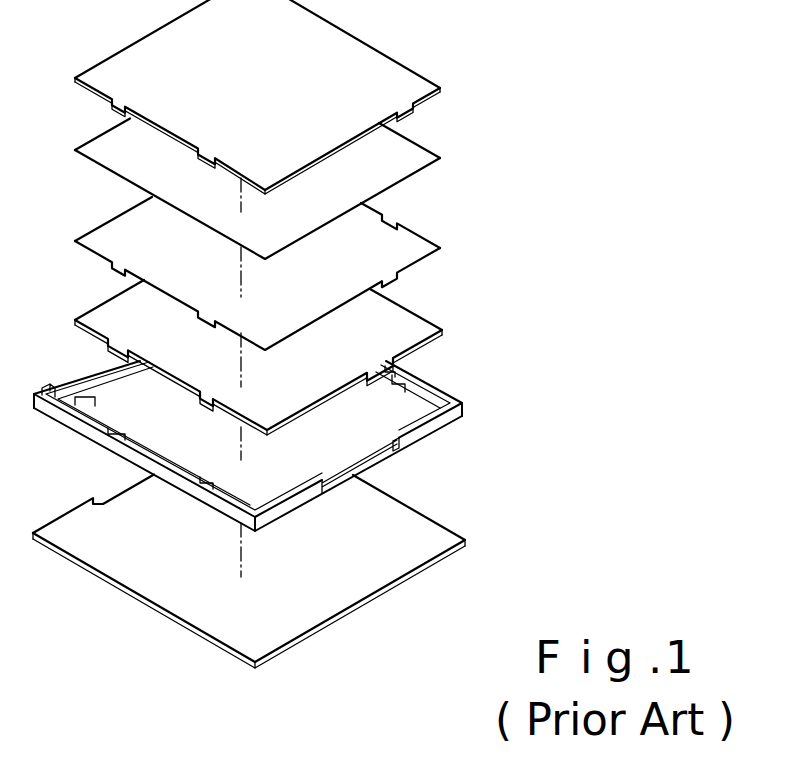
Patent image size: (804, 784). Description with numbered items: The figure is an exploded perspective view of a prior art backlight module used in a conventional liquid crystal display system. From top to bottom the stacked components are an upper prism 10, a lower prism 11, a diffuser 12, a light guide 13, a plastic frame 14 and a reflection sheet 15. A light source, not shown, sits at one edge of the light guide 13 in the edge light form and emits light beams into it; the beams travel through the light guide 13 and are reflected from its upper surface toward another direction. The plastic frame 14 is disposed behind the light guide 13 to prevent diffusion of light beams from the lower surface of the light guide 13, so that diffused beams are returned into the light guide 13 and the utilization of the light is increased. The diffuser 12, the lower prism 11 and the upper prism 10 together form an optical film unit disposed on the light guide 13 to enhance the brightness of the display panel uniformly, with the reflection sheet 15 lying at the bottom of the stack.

The upper prism 10 is at (423, 90).
The lower prism 11 is at (423, 161).
The diffuser 12 is at (423, 250).
The light guide 13 is at (425, 333).
The plastic frame 14 is at (447, 412).
The reflection sheet 15 is at (433, 537).